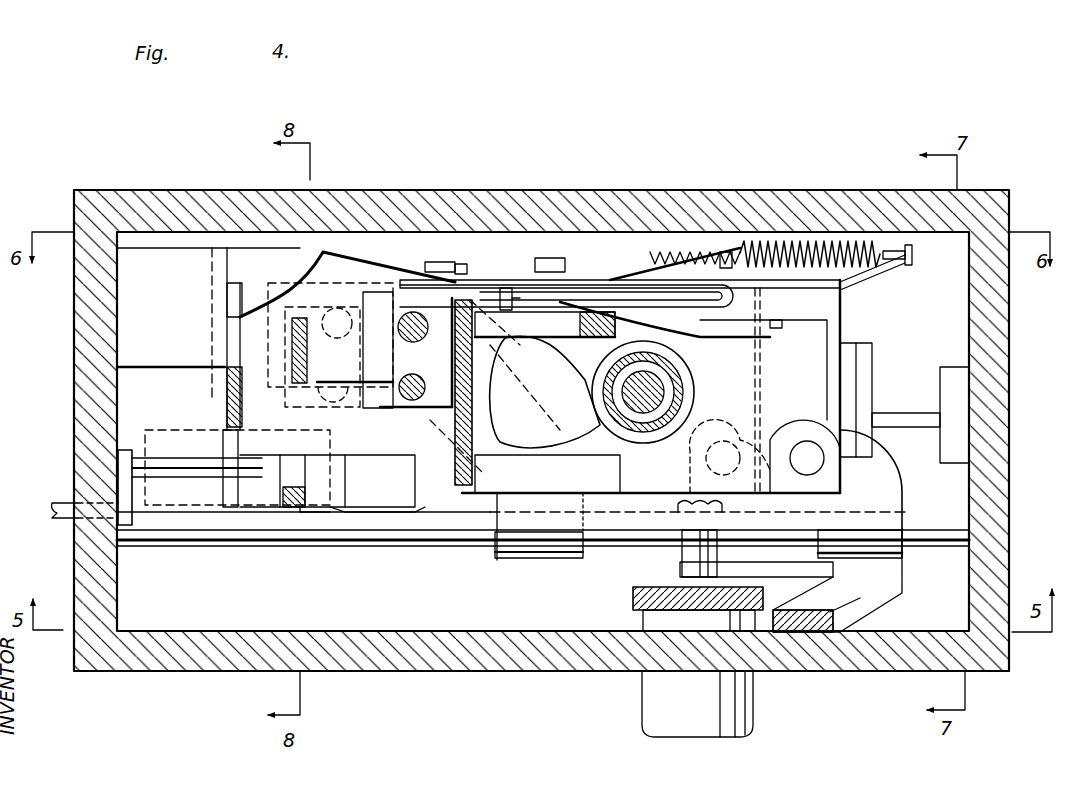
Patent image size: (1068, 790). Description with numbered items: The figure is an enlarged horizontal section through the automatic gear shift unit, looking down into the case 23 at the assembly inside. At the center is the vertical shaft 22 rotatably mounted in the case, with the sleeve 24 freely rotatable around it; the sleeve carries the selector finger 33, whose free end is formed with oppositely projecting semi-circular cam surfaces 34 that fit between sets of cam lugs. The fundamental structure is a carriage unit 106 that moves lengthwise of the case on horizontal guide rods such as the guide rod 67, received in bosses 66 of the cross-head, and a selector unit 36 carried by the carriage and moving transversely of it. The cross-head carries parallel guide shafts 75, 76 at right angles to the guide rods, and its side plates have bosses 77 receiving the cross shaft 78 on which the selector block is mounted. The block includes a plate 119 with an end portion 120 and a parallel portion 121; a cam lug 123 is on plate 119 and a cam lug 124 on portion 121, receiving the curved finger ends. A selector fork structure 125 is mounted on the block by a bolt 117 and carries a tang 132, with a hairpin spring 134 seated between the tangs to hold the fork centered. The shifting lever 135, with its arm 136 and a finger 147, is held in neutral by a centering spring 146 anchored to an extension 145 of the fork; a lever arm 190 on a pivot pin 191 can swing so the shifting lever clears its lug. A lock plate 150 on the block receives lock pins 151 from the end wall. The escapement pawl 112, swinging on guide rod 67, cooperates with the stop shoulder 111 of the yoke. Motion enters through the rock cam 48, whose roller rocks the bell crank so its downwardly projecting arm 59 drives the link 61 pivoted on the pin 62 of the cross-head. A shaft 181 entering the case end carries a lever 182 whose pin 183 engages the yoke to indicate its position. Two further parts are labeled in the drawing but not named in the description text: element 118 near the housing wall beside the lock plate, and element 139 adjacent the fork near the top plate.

The shaft 22 is at (688, 393).
The case 23 is at (606, 246).
The sleeve 24 is at (683, 370).
The selector finger 33 is at (580, 396).
The cam surfaces 34 is at (510, 435).
The selector unit 36 is at (246, 440).
The rock cam 48 is at (640, 597).
The downwardly projecting arm 59 is at (897, 598).
The link 61 is at (748, 563).
The pin 62 is at (690, 547).
The bosses 66 is at (537, 552).
The guide rod 67 is at (236, 527).
The guide shaft 75 is at (413, 342).
The guide shaft 76 is at (425, 390).
The bosses 77 is at (826, 484).
The cross shaft 78 is at (798, 445).
The carriage unit 106 is at (488, 493).
The stop shoulder 111 is at (380, 510).
The escapement pawl 112 is at (296, 476).
The bolt 117 is at (778, 326).
The housing wall 118 is at (848, 300).
The plate 119 is at (818, 322).
The end portion 120 is at (462, 475).
The parallel portion 121 is at (640, 492).
The cam lug 123 is at (538, 448).
The cam lug 124 is at (530, 337).
The selector fork structure 125 is at (476, 274).
The tang 132 is at (500, 294).
The hairpin spring 134 is at (608, 296).
The shifting lever 135 is at (430, 260).
The arm 136 is at (450, 268).
The block 139 is at (552, 258).
The extension 145 is at (895, 257).
The centering spring 146 is at (806, 246).
The finger 147 is at (655, 263).
The lock plate 150 is at (862, 398).
The lock pins 151 is at (899, 422).
The shaft 181 is at (58, 521).
The lever 182 is at (118, 470).
The pin 183 is at (188, 460).
The lever arm 190 is at (500, 283).
The pivot pin 191 is at (722, 268).